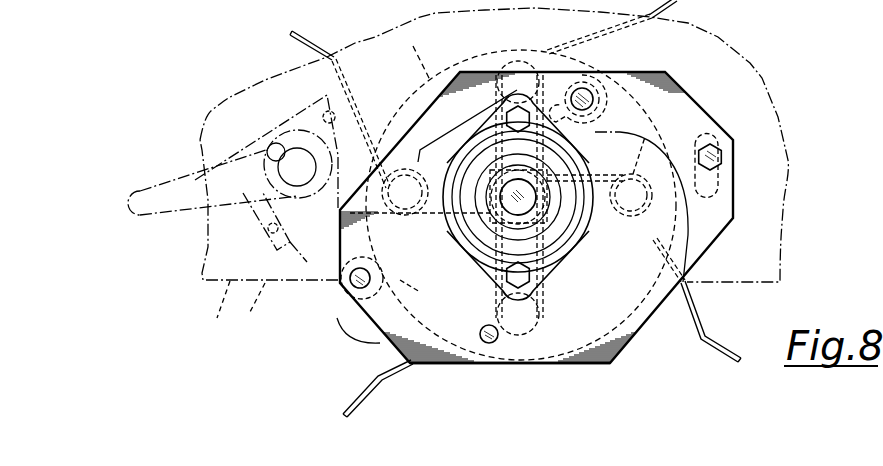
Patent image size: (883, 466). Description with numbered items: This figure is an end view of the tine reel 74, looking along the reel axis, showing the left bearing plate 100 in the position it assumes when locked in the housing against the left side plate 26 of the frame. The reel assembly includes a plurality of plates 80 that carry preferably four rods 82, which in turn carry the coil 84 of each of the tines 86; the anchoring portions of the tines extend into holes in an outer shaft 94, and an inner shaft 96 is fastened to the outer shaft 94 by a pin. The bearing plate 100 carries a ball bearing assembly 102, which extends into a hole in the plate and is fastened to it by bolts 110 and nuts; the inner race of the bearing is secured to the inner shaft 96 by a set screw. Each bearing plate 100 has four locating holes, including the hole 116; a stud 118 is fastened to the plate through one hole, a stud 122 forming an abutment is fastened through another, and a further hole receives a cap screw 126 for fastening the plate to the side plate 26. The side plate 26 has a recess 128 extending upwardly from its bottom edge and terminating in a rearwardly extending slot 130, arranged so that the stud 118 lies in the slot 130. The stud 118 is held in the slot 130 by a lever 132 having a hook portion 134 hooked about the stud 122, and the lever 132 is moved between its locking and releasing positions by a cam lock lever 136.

The left side plate 26 is at (494, 176).
The tine reel 74 is at (470, 266).
The plates 80 is at (415, 53).
The rods 82 is at (513, 72).
The coil 84 is at (590, 364).
The tines 86 is at (340, 70).
The outer shaft 94 is at (585, 228).
The inner shaft 96 is at (510, 203).
The bearing plate 100 is at (519, 364).
The ball bearing assembly 102 is at (578, 250).
The bolts 110 is at (510, 112).
The locating hole 116 is at (488, 343).
The stud 118 is at (588, 92).
The stud 122 is at (350, 288).
The cap screw 126 is at (713, 143).
The recess 128 is at (428, 294).
The slot 130 is at (586, 52).
The lever 132 is at (266, 287).
The hook portion 134 is at (352, 322).
The cam lock lever 136 is at (182, 172).